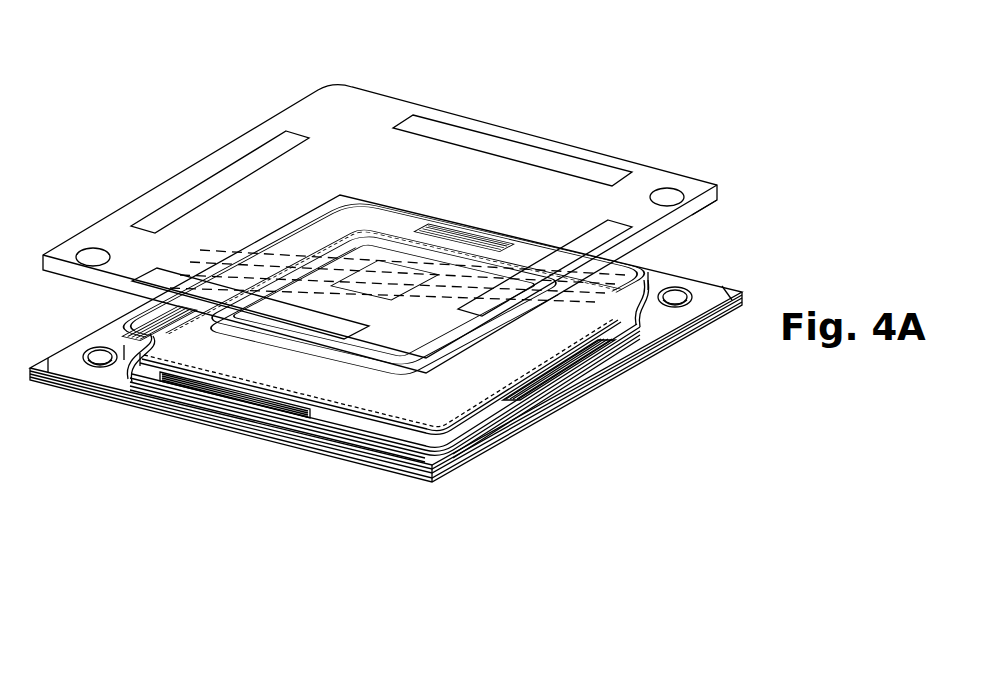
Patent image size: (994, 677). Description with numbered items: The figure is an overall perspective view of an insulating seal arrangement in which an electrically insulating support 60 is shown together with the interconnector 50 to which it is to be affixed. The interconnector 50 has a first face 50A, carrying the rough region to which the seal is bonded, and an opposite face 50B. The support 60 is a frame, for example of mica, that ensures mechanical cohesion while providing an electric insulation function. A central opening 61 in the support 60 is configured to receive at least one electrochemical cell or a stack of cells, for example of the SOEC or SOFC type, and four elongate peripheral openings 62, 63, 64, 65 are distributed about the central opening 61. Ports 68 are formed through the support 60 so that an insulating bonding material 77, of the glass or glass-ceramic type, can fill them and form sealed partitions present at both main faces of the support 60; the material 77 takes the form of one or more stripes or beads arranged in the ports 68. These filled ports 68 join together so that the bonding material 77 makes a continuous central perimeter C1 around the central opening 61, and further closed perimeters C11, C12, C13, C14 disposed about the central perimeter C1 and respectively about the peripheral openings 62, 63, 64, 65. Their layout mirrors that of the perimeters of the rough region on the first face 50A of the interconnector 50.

The interconnector 50 is at (283, 110).
The first face 50A is at (692, 216).
The second face 50B is at (633, 193).
The insulating support 60 is at (446, 452).
The ports 68 is at (395, 463).
The insulating bonding material 77 is at (587, 390).
The central opening 61 is at (360, 372).
The peripheral opening 62 is at (143, 307).
The peripheral opening 63 is at (463, 215).
The peripheral opening 64 is at (642, 348).
The peripheral opening 65 is at (252, 420).
The central perimeter C1 is at (374, 208).
The closed perimeter C11 is at (320, 208).
The closed perimeter C12 is at (650, 258).
The closed perimeter C13 is at (520, 420).
The closed perimeter C14 is at (135, 395).